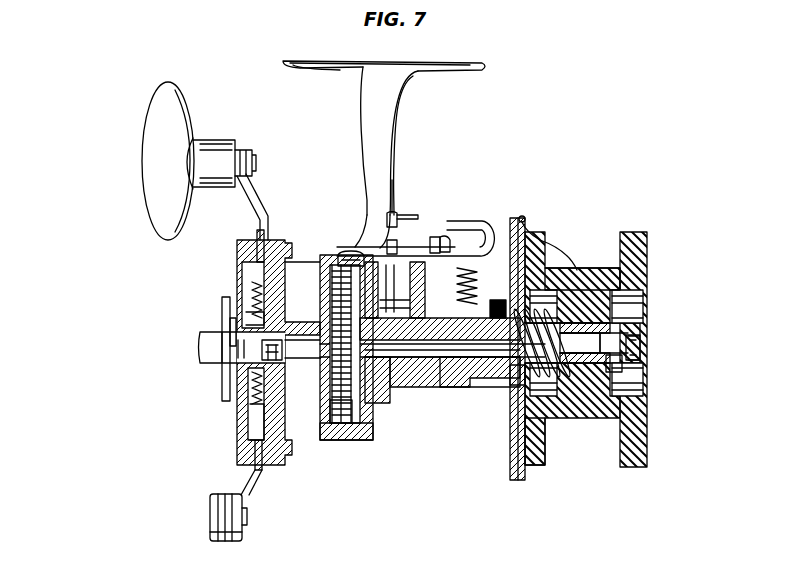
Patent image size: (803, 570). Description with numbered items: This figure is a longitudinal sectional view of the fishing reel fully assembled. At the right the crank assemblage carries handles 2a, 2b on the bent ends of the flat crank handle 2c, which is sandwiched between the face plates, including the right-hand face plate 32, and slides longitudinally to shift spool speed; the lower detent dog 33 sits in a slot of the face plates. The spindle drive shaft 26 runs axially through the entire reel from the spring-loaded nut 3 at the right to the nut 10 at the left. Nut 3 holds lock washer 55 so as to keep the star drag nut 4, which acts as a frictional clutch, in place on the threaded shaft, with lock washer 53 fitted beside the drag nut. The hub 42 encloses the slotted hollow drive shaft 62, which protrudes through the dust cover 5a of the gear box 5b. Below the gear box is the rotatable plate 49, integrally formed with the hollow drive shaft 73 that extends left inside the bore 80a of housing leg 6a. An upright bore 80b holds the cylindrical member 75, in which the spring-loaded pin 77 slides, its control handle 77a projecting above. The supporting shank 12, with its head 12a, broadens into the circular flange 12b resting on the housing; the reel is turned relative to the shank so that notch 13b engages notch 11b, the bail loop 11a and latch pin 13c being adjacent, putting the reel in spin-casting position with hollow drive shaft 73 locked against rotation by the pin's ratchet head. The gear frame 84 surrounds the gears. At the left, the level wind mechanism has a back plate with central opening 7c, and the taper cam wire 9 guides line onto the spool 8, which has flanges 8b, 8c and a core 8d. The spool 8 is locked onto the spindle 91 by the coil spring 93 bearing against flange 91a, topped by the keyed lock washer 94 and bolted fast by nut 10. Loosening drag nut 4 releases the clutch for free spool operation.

The handle 2a is at (160, 133).
The handle 2b is at (213, 508).
The crank handle 2c is at (248, 192).
The spring-loaded nut 3 is at (200, 340).
The star drag nut 4 is at (222, 385).
The right-hand end plate or dust cover 5a is at (322, 440).
The principal gear box 5b is at (351, 440).
The housing leg 6a is at (372, 403).
The central opening 7c is at (510, 462).
The spool 8 is at (615, 487).
The protective flange 8b is at (643, 240).
The spool front flange 8c is at (548, 440).
The spool core 8d is at (600, 270).
The taper cam wire 9 is at (557, 226).
The nut 10 is at (628, 353).
The bail loop 11a is at (477, 220).
The notch 11b is at (450, 246).
The supporting shank 12 is at (390, 122).
The lever head 12a is at (360, 66).
The circular flange 12b is at (354, 252).
The notch 13b is at (433, 237).
The latch pin 13c is at (368, 240).
The spindle drive shaft 26 is at (494, 300).
The right-hand face plate 32 is at (244, 250).
The lower detent member or dog 33 is at (254, 416).
The hub 42 is at (300, 322).
The rotatable plate 49 is at (372, 418).
The lock washer 53 is at (250, 312).
The lock washer 55 is at (222, 330).
The slotted hollow drive shaft 62 is at (283, 362).
The hollow drive shaft 73 is at (432, 388).
The cylindrical member 75 is at (386, 275).
The spring-loaded cylindrical pin 77 is at (396, 213).
The control handle 77a is at (412, 214).
The central bore 80a is at (468, 388).
The central bore 80b is at (445, 318).
The gear frame 84 is at (322, 256).
The spindle 91 is at (600, 340).
The flange 91a is at (510, 378).
The coil spring 93 is at (523, 392).
The lock washer 94 is at (616, 365).